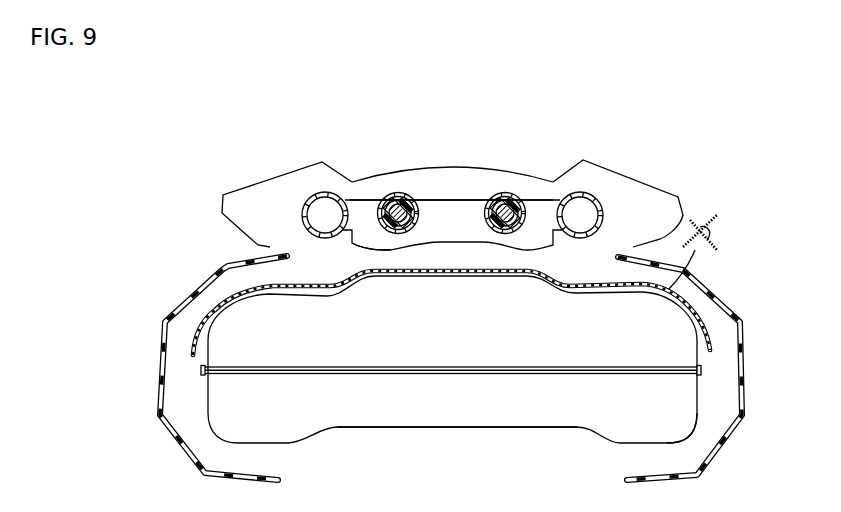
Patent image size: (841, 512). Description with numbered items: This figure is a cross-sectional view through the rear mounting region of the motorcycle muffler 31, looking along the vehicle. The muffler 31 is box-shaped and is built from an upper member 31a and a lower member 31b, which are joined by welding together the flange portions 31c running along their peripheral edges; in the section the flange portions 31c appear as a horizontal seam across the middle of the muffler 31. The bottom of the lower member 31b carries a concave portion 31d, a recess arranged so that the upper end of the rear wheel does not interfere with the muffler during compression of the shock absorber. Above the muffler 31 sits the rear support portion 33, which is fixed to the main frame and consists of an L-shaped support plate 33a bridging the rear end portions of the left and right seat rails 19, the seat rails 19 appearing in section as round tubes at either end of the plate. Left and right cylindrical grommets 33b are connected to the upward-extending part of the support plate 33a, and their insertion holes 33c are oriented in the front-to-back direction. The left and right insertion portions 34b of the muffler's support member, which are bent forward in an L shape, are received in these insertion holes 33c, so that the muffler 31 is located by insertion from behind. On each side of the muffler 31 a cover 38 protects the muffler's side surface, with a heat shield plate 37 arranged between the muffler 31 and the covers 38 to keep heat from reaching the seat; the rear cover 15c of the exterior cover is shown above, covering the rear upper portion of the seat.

The rear cover 15c is at (652, 187).
The seat rail 19 is at (313, 193).
The rear support portion 33 is at (372, 196).
The support plate 33a is at (444, 198).
The cylindrical grommet 33b is at (396, 193).
The insertion hole 33c is at (393, 228).
The insertion portion 34b is at (511, 199).
The heat shield plate 37 is at (698, 239).
The cover 38 is at (203, 282).
The muffler 31 is at (706, 362).
The upper member 31a is at (703, 336).
The lower member 31b is at (698, 414).
The flange portion 31c is at (695, 374).
The concave portion 31d is at (490, 428).